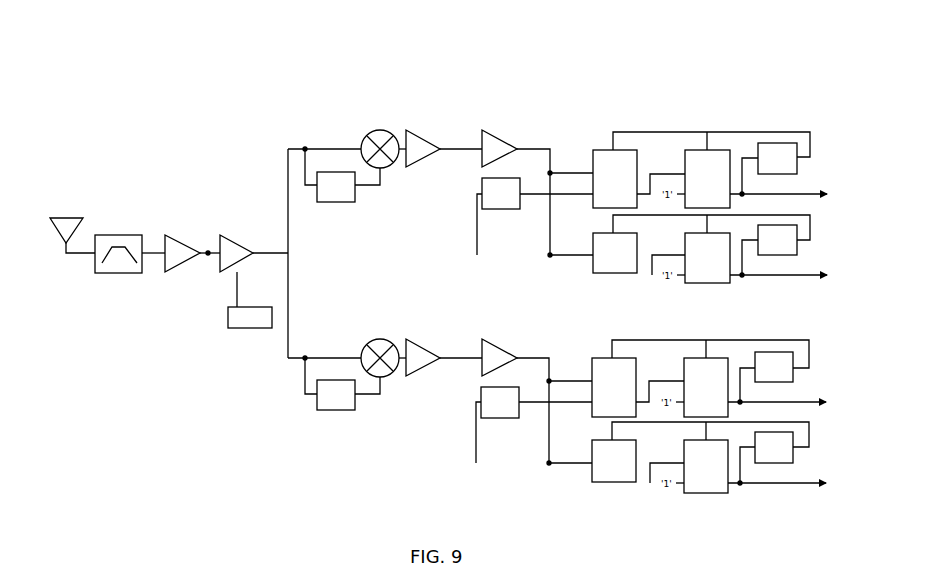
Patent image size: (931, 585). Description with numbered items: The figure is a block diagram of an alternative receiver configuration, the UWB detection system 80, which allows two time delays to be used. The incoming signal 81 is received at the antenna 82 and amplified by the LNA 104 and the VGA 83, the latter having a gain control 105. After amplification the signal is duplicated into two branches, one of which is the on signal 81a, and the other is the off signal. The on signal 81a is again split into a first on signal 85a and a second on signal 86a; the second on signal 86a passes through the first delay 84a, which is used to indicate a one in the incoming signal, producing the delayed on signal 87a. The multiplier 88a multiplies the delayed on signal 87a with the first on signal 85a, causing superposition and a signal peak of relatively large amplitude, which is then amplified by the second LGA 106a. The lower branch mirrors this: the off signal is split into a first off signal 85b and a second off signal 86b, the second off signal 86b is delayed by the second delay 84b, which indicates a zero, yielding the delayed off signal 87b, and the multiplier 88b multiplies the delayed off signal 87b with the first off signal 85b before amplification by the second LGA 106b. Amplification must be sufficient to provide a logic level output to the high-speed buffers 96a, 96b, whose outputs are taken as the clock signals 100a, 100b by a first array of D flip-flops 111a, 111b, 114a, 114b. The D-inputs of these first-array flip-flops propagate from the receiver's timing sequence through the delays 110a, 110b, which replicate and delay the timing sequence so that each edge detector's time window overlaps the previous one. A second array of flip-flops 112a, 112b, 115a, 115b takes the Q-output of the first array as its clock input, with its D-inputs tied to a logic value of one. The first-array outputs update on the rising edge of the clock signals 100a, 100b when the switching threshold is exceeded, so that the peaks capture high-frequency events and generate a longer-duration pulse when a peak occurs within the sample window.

The UWB detection system 80 is at (137, 140).
The signal 81 is at (61, 216).
The antenna 82 is at (110, 234).
The LNA 104 is at (180, 235).
The VGA 83 is at (243, 235).
The gain control 105 is at (233, 329).
The on signal 81a is at (287, 161).
The first on signal 85a is at (324, 147).
The multiplier 88a is at (379, 129).
The second LGA 106a is at (433, 130).
The high-speed buffer 96a is at (504, 130).
The second on signal 86a is at (305, 187).
The first delay 84a is at (336, 203).
The delayed on signal 87a is at (376, 187).
The delay 110a is at (505, 210).
The clock signal 100a is at (550, 147).
The D flip-flop 111a is at (592, 164).
The D flip-flop 112a is at (681, 164).
The D flip-flop 111b is at (612, 273).
The D flip-flop 112b is at (708, 284).
The first off signal 85b is at (324, 356).
The multiplier 88b is at (379, 338).
The second LGA 106b is at (433, 339).
The high-speed buffer 96b is at (504, 339).
The second off signal 86b is at (305, 396).
The second delay 84b is at (336, 411).
The delayed off signal 87b is at (376, 396).
The delay 110b is at (505, 419).
The clock signal 100b is at (549, 356).
The D flip-flop 114a is at (591, 372).
The D flip-flop 115a is at (680, 372).
The D flip-flop 114b is at (620, 482).
The D flip-flop 115b is at (712, 494).